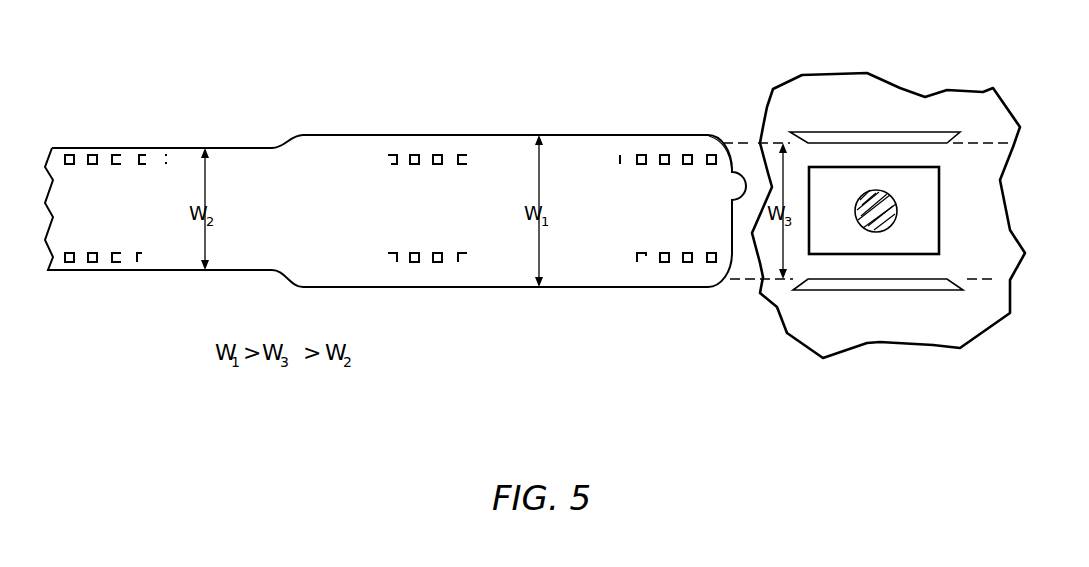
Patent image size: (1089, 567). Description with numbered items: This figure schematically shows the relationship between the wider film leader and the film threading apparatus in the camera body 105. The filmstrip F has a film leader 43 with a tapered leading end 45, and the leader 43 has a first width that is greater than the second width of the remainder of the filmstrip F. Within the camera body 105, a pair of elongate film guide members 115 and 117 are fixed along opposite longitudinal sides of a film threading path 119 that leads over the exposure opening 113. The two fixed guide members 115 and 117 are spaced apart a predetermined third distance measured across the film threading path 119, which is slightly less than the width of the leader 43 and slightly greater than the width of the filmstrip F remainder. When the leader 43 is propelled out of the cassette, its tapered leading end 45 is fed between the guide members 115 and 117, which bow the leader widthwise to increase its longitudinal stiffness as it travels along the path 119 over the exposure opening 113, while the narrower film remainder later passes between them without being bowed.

The filmstrip F is at (258, 130).
The film leader 43 is at (368, 147).
The tapered leading end 45 is at (710, 136).
The camera body 105 is at (932, 343).
The exposure opening 113 is at (940, 190).
The film guide member 115 is at (883, 137).
The film guide member 117 is at (870, 284).
The film threading path 119 is at (755, 143).